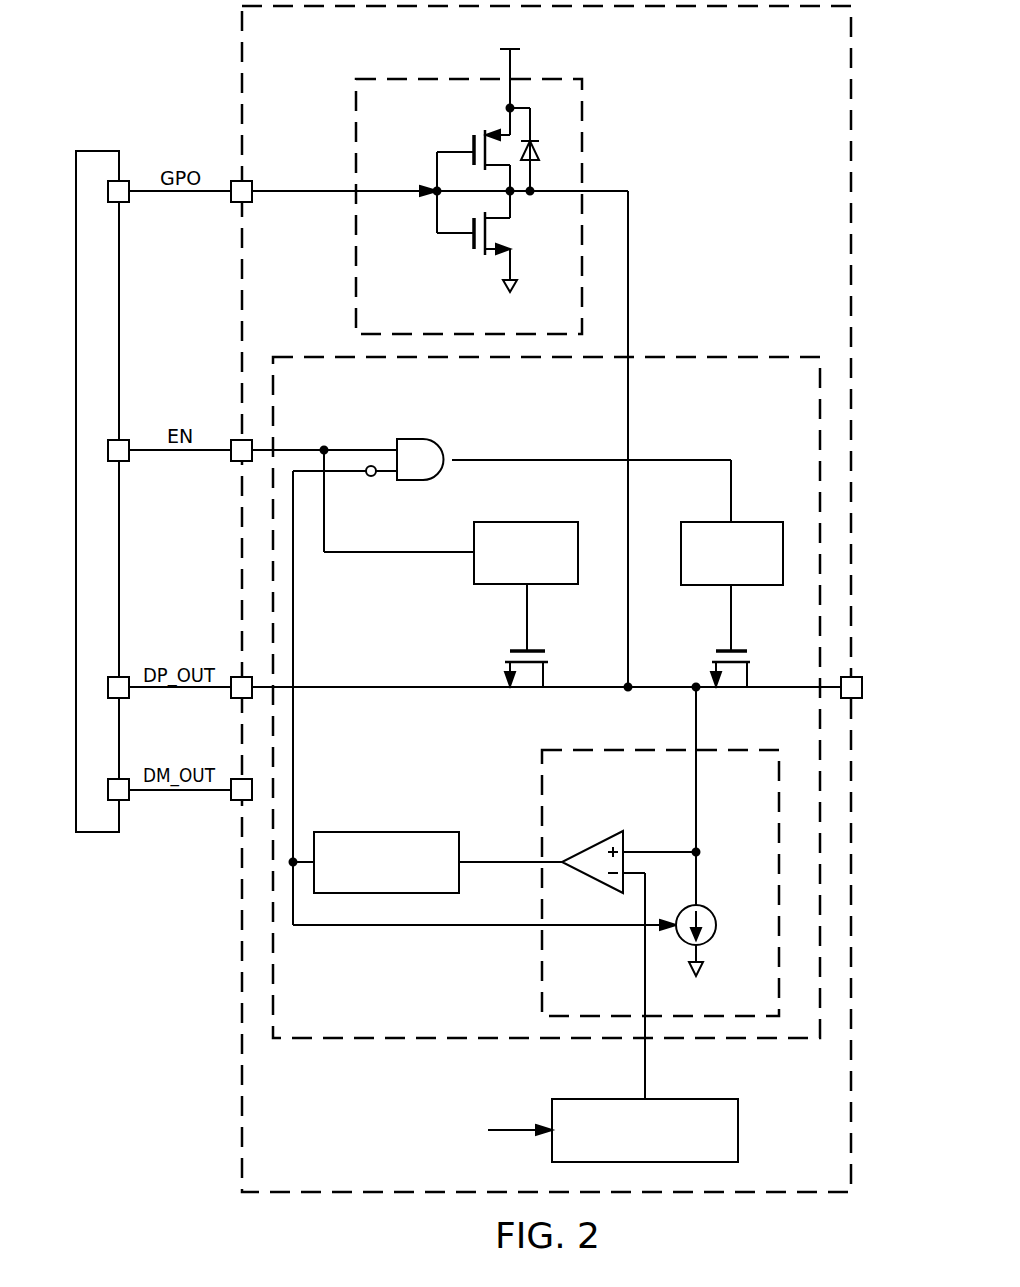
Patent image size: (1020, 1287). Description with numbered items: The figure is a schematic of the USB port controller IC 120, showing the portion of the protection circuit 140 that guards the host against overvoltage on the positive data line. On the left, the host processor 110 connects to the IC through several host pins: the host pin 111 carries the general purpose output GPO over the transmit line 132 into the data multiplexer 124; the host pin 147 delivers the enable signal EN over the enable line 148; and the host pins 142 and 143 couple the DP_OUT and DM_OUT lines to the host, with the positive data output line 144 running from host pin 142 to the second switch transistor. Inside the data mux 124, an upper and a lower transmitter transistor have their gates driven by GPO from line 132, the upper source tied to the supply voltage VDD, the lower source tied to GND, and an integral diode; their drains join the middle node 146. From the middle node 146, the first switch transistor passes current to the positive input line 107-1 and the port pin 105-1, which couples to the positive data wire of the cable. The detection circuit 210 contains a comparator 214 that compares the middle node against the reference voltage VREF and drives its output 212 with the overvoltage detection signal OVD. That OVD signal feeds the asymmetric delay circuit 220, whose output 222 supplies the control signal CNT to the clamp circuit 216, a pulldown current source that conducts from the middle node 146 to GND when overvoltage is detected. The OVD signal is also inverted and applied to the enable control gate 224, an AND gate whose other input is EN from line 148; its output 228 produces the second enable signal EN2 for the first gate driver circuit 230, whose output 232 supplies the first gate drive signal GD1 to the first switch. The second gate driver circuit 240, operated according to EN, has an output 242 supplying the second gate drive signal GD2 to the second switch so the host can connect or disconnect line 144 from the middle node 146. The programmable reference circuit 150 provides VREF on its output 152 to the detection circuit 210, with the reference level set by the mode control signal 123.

The host processor 110 is at (97, 150).
The host pin 111 is at (237, 181).
The transmit line 132 is at (305, 191).
The data multiplexer 124 is at (408, 78).
The USB port controller IC 120 is at (735, 132).
The protection circuit 140 is at (743, 355).
The enable control gate 224 is at (425, 438).
The gate output 228 is at (581, 459).
The second gate driver circuit 240 is at (515, 522).
The first gate driver circuit 230 is at (758, 522).
The enable line 148 is at (421, 556).
The second gate driver output 242 is at (526, 614).
The first gate driver output 232 is at (730, 614).
The positive data output line 144 is at (415, 686).
The middle node 146 is at (587, 690).
The positive input line 107-1 is at (761, 690).
The port pin 105-1 is at (858, 699).
The host pin 147 is at (237, 462).
The host pin 142 is at (237, 699).
The host pin 143 is at (237, 801).
The asymmetric delay output 222 is at (295, 718).
The asymmetric delay circuit 220 is at (387, 831).
The comparator 214 is at (592, 846).
The detection circuit output 212 is at (500, 865).
The clamp circuit 216 is at (733, 896).
The detection circuit 210 is at (540, 957).
The programmable reference output 152 is at (645, 965).
The programmable reference circuit 150 is at (740, 1142).
The mode control signal 123 is at (520, 1133).